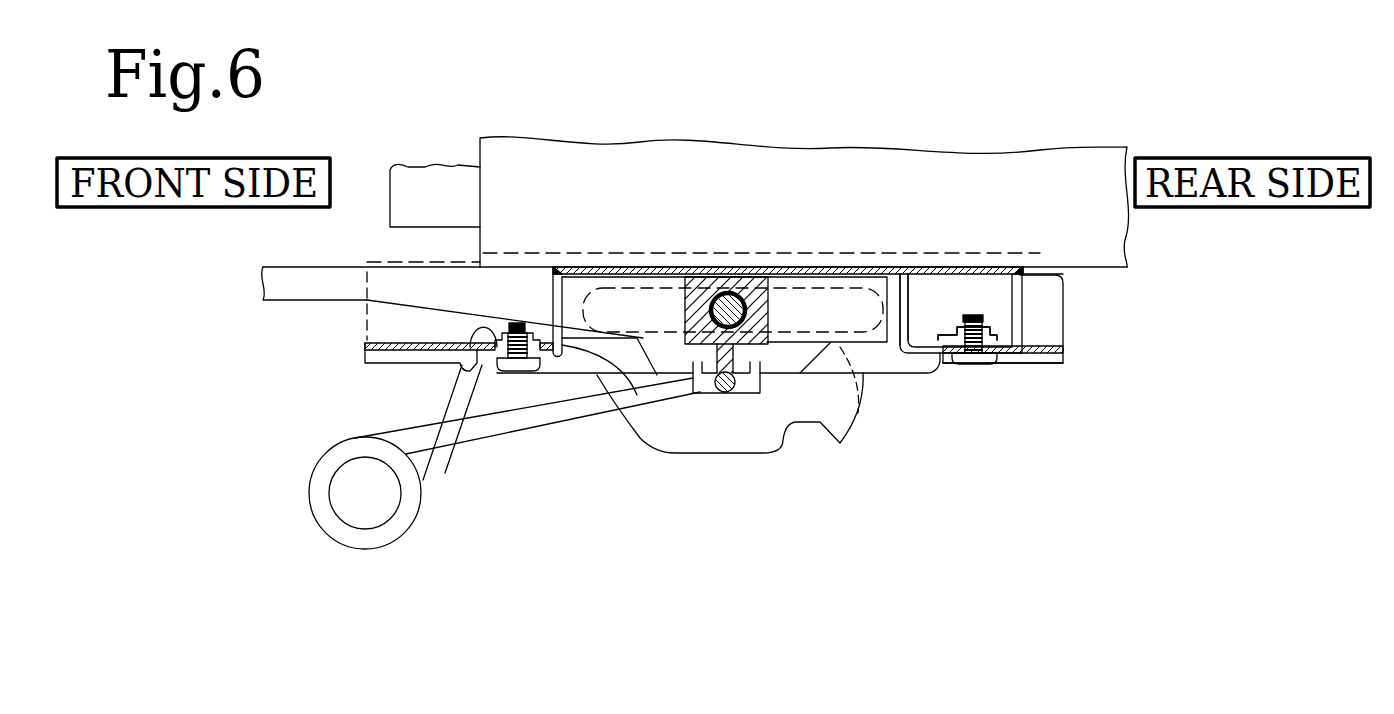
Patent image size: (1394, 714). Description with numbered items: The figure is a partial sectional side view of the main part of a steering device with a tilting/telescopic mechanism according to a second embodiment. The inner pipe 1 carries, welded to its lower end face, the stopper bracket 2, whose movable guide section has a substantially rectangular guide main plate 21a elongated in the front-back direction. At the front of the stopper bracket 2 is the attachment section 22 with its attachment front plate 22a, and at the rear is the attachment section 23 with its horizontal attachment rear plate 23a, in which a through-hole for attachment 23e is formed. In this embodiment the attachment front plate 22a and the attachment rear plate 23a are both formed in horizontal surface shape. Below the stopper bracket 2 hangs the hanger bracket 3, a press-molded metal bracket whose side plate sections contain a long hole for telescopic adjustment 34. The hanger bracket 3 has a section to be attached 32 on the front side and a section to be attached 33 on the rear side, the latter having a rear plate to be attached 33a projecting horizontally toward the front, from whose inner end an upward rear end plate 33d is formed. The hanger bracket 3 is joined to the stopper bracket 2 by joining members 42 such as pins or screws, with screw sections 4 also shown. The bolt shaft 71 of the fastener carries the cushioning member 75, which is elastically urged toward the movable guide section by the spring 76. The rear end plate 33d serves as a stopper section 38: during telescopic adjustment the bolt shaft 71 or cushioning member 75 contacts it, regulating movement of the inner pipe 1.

The inner pipe 1 is at (1105, 151).
The stopper bracket 2 is at (798, 267).
The hanger bracket 3 is at (367, 330).
The screw section 4 is at (517, 322).
The guide main plate 21a is at (722, 267).
The attachment section 22 is at (565, 307).
The attachment front plate 22a is at (545, 362).
The attachment section 23 is at (1020, 297).
The attachment rear plate 23a is at (936, 312).
The through-hole for attachment 23e is at (523, 330).
The section to be attached 32 is at (380, 367).
The section to be attached 33 is at (1043, 353).
The rear plate to be attached 33a is at (1003, 360).
The rear end plate 33d is at (906, 315).
The stopper section 38 is at (906, 315).
The long hole for telescopic adjustment 34 is at (858, 413).
The joining member 42 is at (523, 371).
The bolt shaft 71 is at (744, 299).
The cushioning member 75 is at (762, 345).
The spring 76 is at (317, 467).